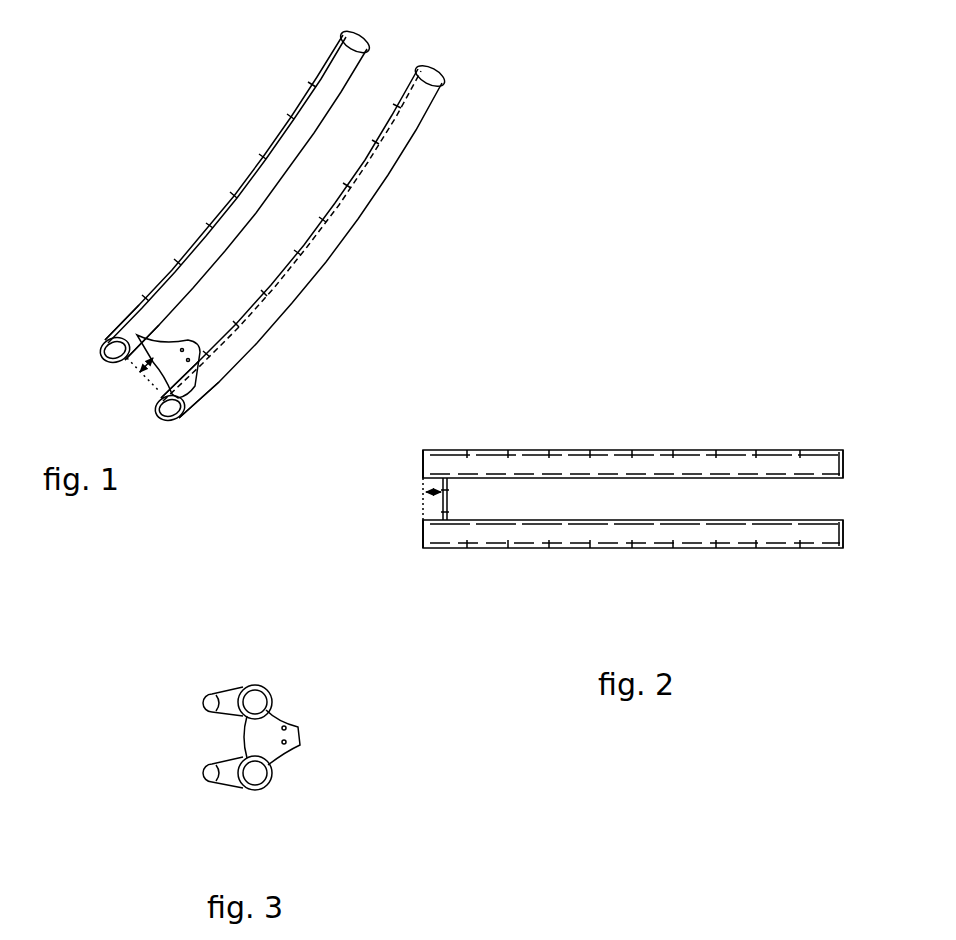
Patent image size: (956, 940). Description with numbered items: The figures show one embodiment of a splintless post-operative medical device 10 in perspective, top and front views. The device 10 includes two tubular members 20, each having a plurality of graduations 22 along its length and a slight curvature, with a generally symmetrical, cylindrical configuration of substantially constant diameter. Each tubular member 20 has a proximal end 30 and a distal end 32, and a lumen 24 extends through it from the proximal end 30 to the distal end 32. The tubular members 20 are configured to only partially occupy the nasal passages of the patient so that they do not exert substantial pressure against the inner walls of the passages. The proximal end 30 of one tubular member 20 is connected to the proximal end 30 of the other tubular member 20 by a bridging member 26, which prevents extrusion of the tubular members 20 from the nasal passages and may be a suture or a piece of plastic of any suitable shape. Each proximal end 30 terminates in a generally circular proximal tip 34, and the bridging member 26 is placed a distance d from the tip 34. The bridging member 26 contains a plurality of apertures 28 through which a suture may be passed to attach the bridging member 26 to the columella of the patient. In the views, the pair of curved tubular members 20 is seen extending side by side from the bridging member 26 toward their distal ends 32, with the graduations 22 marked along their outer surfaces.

In FIG. 1, the post-operative medical device 10 is at (488, 167).
In FIG. 2, the post-operative medical device 10 is at (690, 361).
In FIG. 1, the tubular member 20 is at (280, 153).
In FIG. 2, the tubular member 20 is at (528, 466).
In FIG. 3, the tubular member 20 is at (253, 684).
In FIG. 1, the graduations 22 is at (236, 225).
In FIG. 2, the graduations 22 is at (632, 460).
In FIG. 1, the lumen 24 is at (107, 353).
In FIG. 2, the lumen 24 is at (423, 466).
In FIG. 3, the lumen 24 is at (258, 702).
In FIG. 1, the bridging member 26 is at (163, 363).
In FIG. 2, the bridging member 26 is at (450, 502).
In FIG. 3, the bridging member 26 is at (255, 735).
In FIG. 1, the apertures 28 is at (190, 360).
In FIG. 2, the apertures 28 is at (448, 490).
In FIG. 3, the apertures 28 is at (290, 742).
In FIG. 1, the proximal end 30 is at (110, 318).
In FIG. 2, the proximal end 30 is at (441, 442).
In FIG. 1, the distal end 32 is at (318, 61).
In FIG. 2, the distal end 32 is at (812, 449).
In FIG. 3, the distal end 32 is at (204, 681).
In FIG. 1, the proximal tip 34 is at (103, 343).